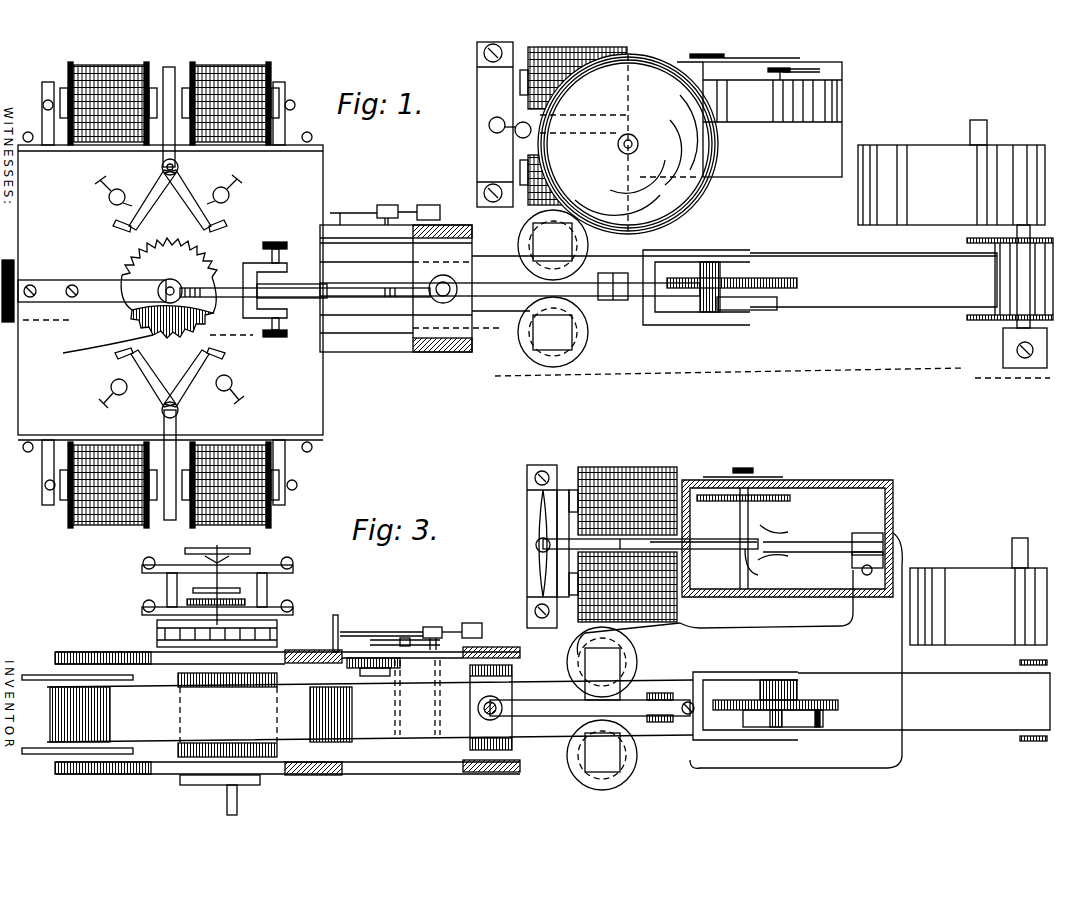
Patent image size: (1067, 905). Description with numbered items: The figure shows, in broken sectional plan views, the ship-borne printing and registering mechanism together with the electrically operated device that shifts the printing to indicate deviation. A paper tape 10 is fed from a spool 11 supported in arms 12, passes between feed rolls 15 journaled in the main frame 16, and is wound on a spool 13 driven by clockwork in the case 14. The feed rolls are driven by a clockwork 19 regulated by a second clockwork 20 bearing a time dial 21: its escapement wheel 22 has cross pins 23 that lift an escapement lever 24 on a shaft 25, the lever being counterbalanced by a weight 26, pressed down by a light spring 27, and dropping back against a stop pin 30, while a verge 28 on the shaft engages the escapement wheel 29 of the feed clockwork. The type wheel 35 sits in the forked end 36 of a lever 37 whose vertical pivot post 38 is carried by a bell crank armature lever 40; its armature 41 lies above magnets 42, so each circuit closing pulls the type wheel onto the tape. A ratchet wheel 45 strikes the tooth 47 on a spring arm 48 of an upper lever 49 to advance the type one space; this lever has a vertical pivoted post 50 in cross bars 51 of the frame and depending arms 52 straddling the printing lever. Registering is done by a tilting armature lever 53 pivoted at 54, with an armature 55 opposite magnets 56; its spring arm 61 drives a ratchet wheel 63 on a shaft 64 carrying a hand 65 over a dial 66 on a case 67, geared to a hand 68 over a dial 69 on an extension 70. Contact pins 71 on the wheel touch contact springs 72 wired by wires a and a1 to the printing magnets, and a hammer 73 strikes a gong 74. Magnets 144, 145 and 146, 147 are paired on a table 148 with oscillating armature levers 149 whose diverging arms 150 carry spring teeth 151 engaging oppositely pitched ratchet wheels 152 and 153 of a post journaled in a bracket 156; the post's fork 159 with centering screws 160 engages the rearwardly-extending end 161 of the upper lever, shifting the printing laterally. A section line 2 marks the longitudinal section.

In FIG. 1, the section line 2 is at (774, 378).
In FIG. 1, the tape 10 is at (455, 353).
In FIG. 3, the tape 10 is at (156, 716).
In FIG. 3, the wheel or spool 11 is at (40, 675).
In FIG. 3, the arms 12 is at (76, 648).
In FIG. 1, the spool 13 is at (990, 322).
In FIG. 1, the case 14 is at (951, 172).
In FIG. 3, the case 14 is at (978, 639).
In FIG. 3, the feed rolls 15 is at (383, 700).
In FIG. 3, the main frame 16 is at (490, 648).
In FIG. 3, the clockwork 19 is at (267, 760).
In FIG. 3, the second clockwork 20 is at (295, 606).
In FIG. 3, the dial 21 is at (210, 579).
In FIG. 3, the escapement wheel 22 is at (157, 634).
In FIG. 3, the cross pins 23 is at (280, 635).
In FIG. 3, the escapement lever 24 is at (390, 628).
In FIG. 3, the shaft 25 is at (432, 627).
In FIG. 3, the weight 26 is at (463, 620).
In FIG. 1, the light spring 27 is at (372, 212).
In FIG. 3, the light spring 27 is at (405, 637).
In FIG. 3, the verge 28 is at (416, 676).
In FIG. 3, the escapement wheel 29 is at (380, 668).
In FIG. 3, the stop pin 30 is at (344, 626).
In FIG. 1, the printing or type wheel 35 is at (732, 273).
In FIG. 3, the printing or type wheel 35 is at (820, 700).
In FIG. 1, the forked end 36 is at (722, 252).
In FIG. 3, the forked end 36 is at (730, 673).
In FIG. 3, the lever 37 is at (642, 700).
In FIG. 3, the vertical pivot post 38 is at (503, 706).
In FIG. 3, the bell crank armature lever 40 is at (515, 748).
In FIG. 1, the armature 41 is at (575, 240).
In FIG. 3, the armature 41 is at (625, 662).
In FIG. 1, the magnets 42 is at (518, 243).
In FIG. 3, the magnets 42 is at (568, 655).
In FIG. 1, the ratchet wheel 45 is at (780, 290).
In FIG. 3, the ratchet wheel 45 is at (800, 731).
In FIG. 3, the tooth 47 is at (830, 727).
In FIG. 1, the spring arm 48 is at (762, 310).
In FIG. 3, the spring arm 48 is at (825, 718).
In FIG. 1, the lever 49 is at (508, 297).
In FIG. 1, the vertical pivoted post 50 is at (443, 303).
In FIG. 1, the cross bars 51 is at (413, 343).
In FIG. 1, the depending arms 52 is at (620, 280).
In FIG. 3, the depending arms 52 is at (665, 693).
In FIG. 3, the tilting armature lever 53 is at (536, 545).
In FIG. 3, the pivot 54 is at (540, 505).
In FIG. 1, the armature 55 is at (515, 160).
In FIG. 3, the armature 55 is at (540, 565).
In FIG. 1, the magnets 56 is at (545, 50).
In FIG. 3, the magnets 56 is at (650, 470).
In FIG. 3, the spring arm 61 is at (717, 522).
In FIG. 3, the ratchet wheel 63 is at (790, 542).
In FIG. 3, the shaft 64 is at (755, 503).
In FIG. 1, the hand 65 is at (707, 48).
In FIG. 3, the hand 65 is at (748, 470).
In FIG. 1, the dial 66 is at (745, 55).
In FIG. 3, the dial 66 is at (783, 478).
In FIG. 1, the case 67 is at (779, 64).
In FIG. 3, the case 67 is at (850, 480).
In FIG. 1, the hand 68 is at (808, 69).
In FIG. 1, the dial 69 is at (842, 66).
In FIG. 1, the extension 70 is at (759, 119).
In FIG. 3, the contact pins 71 is at (758, 567).
In FIG. 3, the contact springs 72 is at (838, 540).
In FIG. 1, the hammer 73 is at (515, 133).
In FIG. 1, the gong 74 is at (628, 144).
In FIG. 1, the magnet 144 is at (99, 94).
In FIG. 1, the magnet 145 is at (238, 94).
In FIG. 1, the magnet 146 is at (99, 492).
In FIG. 1, the magnet 147 is at (239, 492).
In FIG. 1, the table 148 is at (170, 292).
In FIG. 1, the oscillating armature lever 149 is at (176, 152).
In FIG. 1, the diverging arms 150 is at (170, 288).
In FIG. 1, the spring teeth 151 is at (108, 187).
In FIG. 1, the ratchet wheel 152 is at (169, 275).
In FIG. 1, the ratchet wheel 153 is at (91, 349).
In FIG. 1, the bracket 156 is at (100, 303).
In FIG. 1, the fork 159 is at (238, 290).
In FIG. 1, the centering screws 160 is at (276, 242).
In FIG. 1, the rearwardly-extending end 161 is at (352, 297).
In FIG. 3, the wire a is at (739, 650).
In FIG. 3, the wire a1 is at (895, 768).